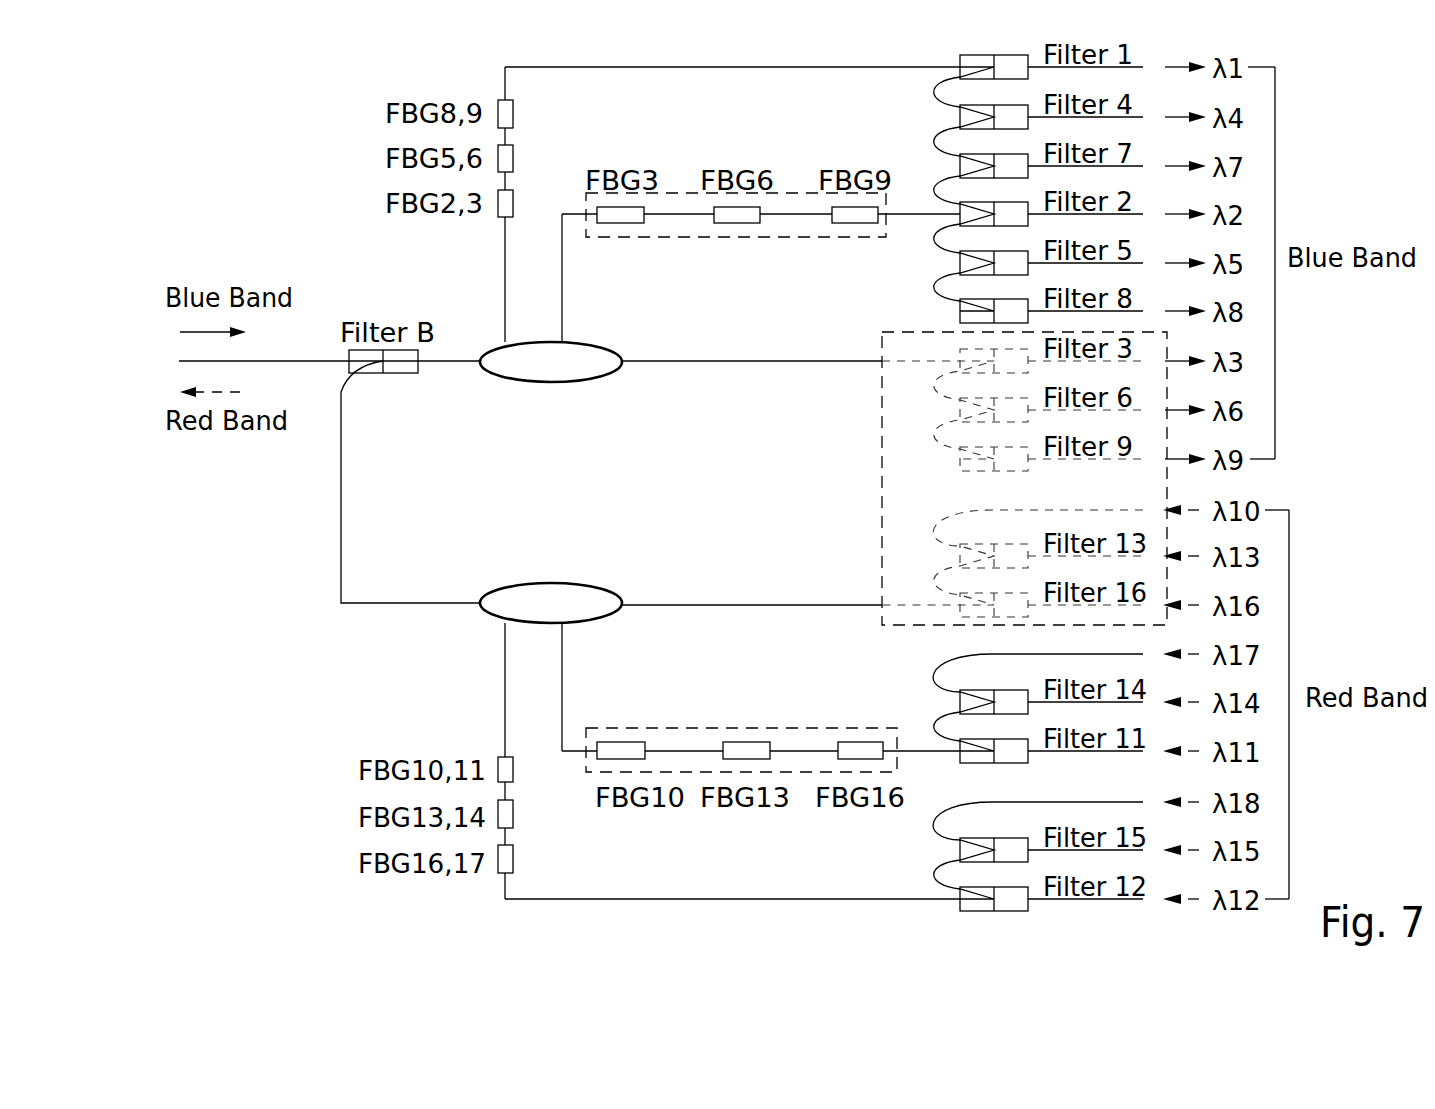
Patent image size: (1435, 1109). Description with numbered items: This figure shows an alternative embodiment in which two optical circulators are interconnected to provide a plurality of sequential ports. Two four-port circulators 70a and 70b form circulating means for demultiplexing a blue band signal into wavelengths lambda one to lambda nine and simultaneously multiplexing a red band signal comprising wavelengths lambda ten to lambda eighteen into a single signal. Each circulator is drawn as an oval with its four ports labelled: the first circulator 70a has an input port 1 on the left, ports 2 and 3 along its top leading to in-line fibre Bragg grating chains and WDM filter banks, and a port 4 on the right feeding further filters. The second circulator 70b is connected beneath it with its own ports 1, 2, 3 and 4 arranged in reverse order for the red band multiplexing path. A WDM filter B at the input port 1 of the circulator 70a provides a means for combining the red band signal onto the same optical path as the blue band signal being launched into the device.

The 4-port circulator 70a is at (567, 367).
The 4-port circulator 70b is at (493, 611).
The input port 1 is at (565, 483).
The port 2 is at (535, 465).
The port 3 is at (533, 465).
The port 4 is at (550, 463).